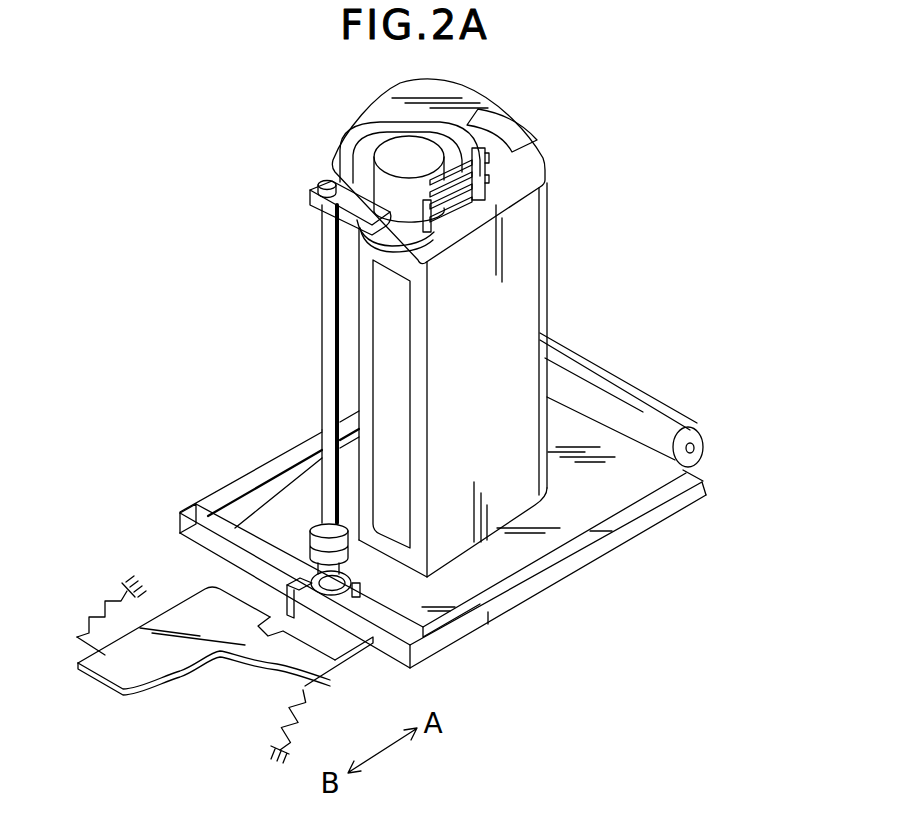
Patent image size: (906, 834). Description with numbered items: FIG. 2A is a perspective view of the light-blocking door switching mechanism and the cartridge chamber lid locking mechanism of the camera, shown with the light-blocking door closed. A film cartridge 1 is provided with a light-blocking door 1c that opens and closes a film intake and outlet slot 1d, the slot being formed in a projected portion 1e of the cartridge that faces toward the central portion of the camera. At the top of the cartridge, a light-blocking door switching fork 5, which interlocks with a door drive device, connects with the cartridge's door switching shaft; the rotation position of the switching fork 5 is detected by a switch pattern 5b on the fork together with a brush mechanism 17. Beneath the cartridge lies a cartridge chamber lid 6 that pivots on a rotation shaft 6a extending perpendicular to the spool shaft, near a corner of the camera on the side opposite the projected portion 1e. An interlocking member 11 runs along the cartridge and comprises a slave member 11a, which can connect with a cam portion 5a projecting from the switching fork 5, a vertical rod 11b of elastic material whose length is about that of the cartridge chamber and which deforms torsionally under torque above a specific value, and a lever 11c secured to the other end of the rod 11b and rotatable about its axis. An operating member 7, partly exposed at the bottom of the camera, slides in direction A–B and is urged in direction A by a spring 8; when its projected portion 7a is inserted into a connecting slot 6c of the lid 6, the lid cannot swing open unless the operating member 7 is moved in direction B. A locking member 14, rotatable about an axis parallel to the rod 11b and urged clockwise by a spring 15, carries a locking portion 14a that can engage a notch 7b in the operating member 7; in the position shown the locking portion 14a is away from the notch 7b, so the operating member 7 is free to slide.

The film cartridge 1 is at (427, 379).
The light-blocking door 1c is at (381, 377).
The film intake and outlet slot 1d is at (404, 462).
The projected portion 1e is at (430, 577).
The light-blocking door switching fork 5 is at (410, 192).
The cam portion 5a is at (421, 240).
The switch pattern 5b is at (334, 221).
The cartridge chamber lid 6 is at (479, 529).
The rotation shaft 6a is at (694, 449).
The connecting slot 6c is at (420, 638).
The operating member 7 is at (225, 666).
The projected portion 7a is at (360, 641).
The notch 7b is at (263, 632).
The spring 8 is at (88, 610).
The interlocking member 11 is at (263, 337).
The slave member 11a is at (312, 191).
The rod 11b is at (322, 305).
The lever 11c is at (272, 476).
The locking member 14 is at (262, 564).
The locking portion 14a is at (286, 588).
The spring 15 is at (273, 727).
The brush mechanism 17 is at (494, 160).